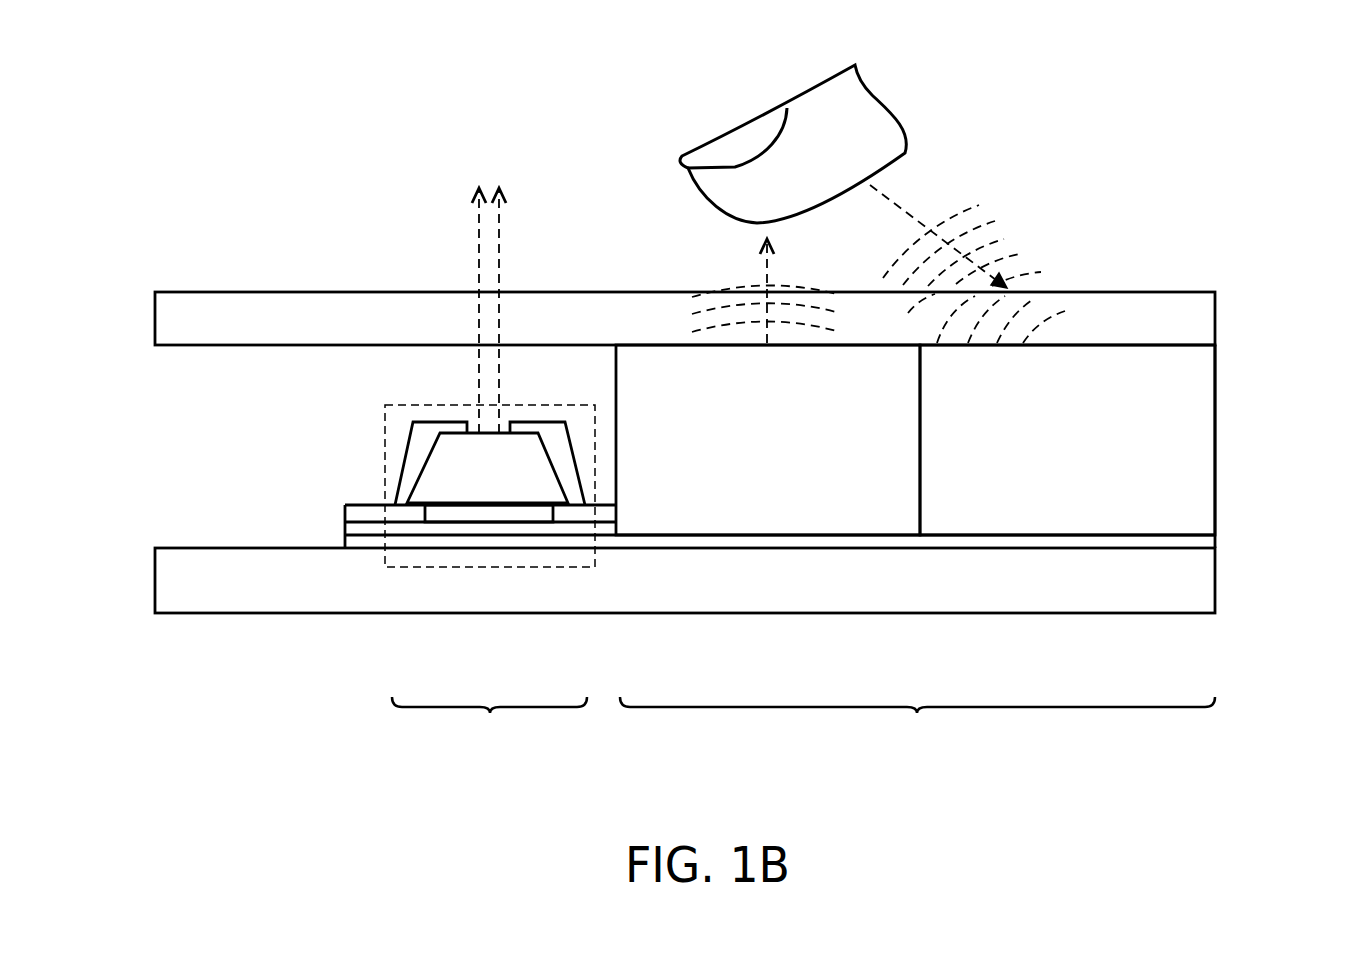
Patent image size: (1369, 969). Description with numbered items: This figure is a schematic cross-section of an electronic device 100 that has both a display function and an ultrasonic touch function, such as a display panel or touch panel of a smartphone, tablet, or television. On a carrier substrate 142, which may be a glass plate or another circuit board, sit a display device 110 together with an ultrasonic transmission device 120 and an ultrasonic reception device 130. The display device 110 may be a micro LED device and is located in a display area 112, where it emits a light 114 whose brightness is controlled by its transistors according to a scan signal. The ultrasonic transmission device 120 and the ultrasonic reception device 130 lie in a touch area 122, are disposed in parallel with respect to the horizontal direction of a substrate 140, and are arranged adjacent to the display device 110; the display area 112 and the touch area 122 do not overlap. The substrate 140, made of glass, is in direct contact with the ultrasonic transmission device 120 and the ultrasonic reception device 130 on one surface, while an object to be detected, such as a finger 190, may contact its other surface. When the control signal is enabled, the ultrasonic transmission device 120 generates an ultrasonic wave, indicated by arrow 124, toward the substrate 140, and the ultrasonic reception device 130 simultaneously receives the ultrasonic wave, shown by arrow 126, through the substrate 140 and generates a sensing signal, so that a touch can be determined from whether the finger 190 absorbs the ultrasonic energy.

The electronic device 100 is at (1315, 796).
The display device 110 is at (495, 567).
The display area 112 is at (489, 726).
The light 114 is at (478, 257).
The ultrasonic transmission device 120 is at (822, 537).
The touch area 122 is at (917, 726).
The arrow indicating ultrasonic wave 124 is at (767, 267).
The arrow indicating received ultrasonic wave 126 is at (898, 205).
The ultrasonic reception device 130 is at (1048, 537).
The substrate 140 is at (1198, 319).
The carrier substrate 142 is at (1198, 583).
The finger 190 is at (863, 113).